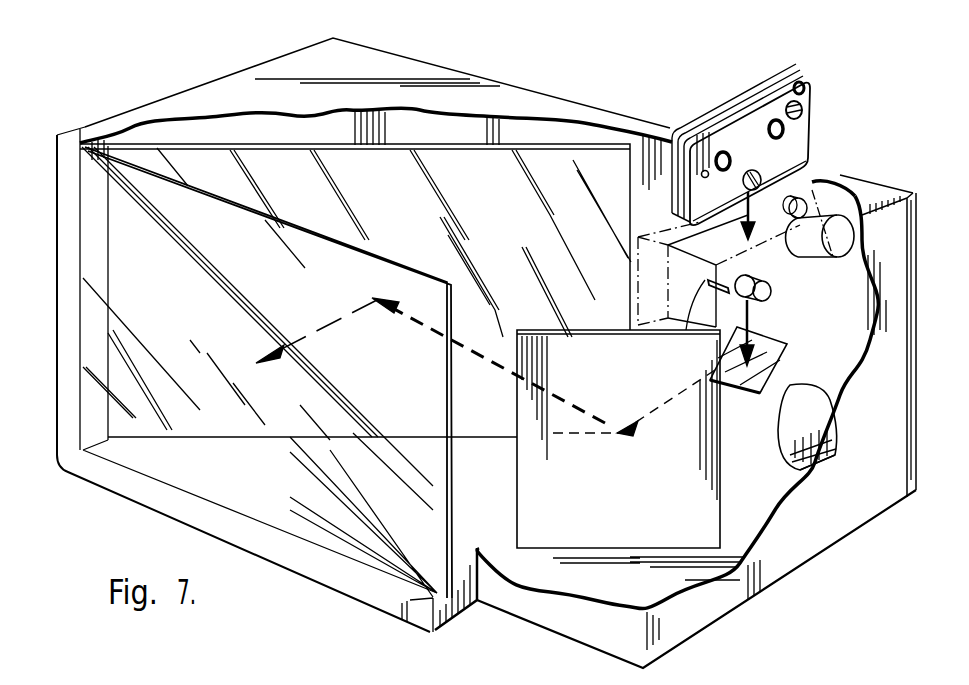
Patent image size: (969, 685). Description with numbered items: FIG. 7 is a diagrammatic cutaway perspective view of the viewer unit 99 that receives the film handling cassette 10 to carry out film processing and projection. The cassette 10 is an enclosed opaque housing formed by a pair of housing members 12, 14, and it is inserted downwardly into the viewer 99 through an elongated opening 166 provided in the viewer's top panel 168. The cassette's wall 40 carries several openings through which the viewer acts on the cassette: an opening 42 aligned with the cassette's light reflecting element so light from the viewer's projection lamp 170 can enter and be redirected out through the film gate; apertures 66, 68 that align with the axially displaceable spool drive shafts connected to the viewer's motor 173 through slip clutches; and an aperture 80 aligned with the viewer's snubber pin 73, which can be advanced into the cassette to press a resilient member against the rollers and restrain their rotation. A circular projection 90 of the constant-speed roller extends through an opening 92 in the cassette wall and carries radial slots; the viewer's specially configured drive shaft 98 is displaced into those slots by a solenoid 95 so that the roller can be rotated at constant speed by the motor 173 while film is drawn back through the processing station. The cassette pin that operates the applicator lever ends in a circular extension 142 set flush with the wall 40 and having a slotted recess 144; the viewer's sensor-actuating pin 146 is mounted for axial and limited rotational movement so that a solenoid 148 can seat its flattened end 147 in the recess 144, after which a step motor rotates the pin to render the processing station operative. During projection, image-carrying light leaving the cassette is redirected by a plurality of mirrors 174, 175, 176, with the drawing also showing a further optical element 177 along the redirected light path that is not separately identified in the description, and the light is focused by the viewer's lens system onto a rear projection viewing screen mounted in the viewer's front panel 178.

The cassette 10 is at (732, 78).
The housing member 12 is at (808, 128).
The housing member 14 is at (703, 107).
The wall 40 is at (806, 152).
The opening 42 is at (760, 172).
The aperture 66 is at (775, 123).
The aperture 68 is at (724, 153).
The snubber pin 73 is at (618, 439).
The aperture 80 is at (705, 178).
The circular projection 90 is at (801, 92).
The opening 92 is at (804, 84).
The solenoid 95 is at (914, 193).
The drive shaft 98 is at (872, 187).
The viewer unit 99 is at (516, 73).
The circular extension 142 is at (802, 114).
The slotted recess 144 is at (802, 106).
The sensor-actuating pin 146 is at (757, 291).
The flattened end 147 is at (719, 261).
The solenoid 148 is at (827, 260).
The elongated opening 166 is at (830, 176).
The top panel 168 is at (362, 56).
The projection lamp 170 is at (766, 297).
The motor 173 is at (820, 408).
The mirror 174 is at (786, 346).
The mirror 175 is at (683, 483).
The mirror 176 is at (600, 163).
The tilted mirror 177 is at (400, 355).
The front panel 178 is at (107, 481).